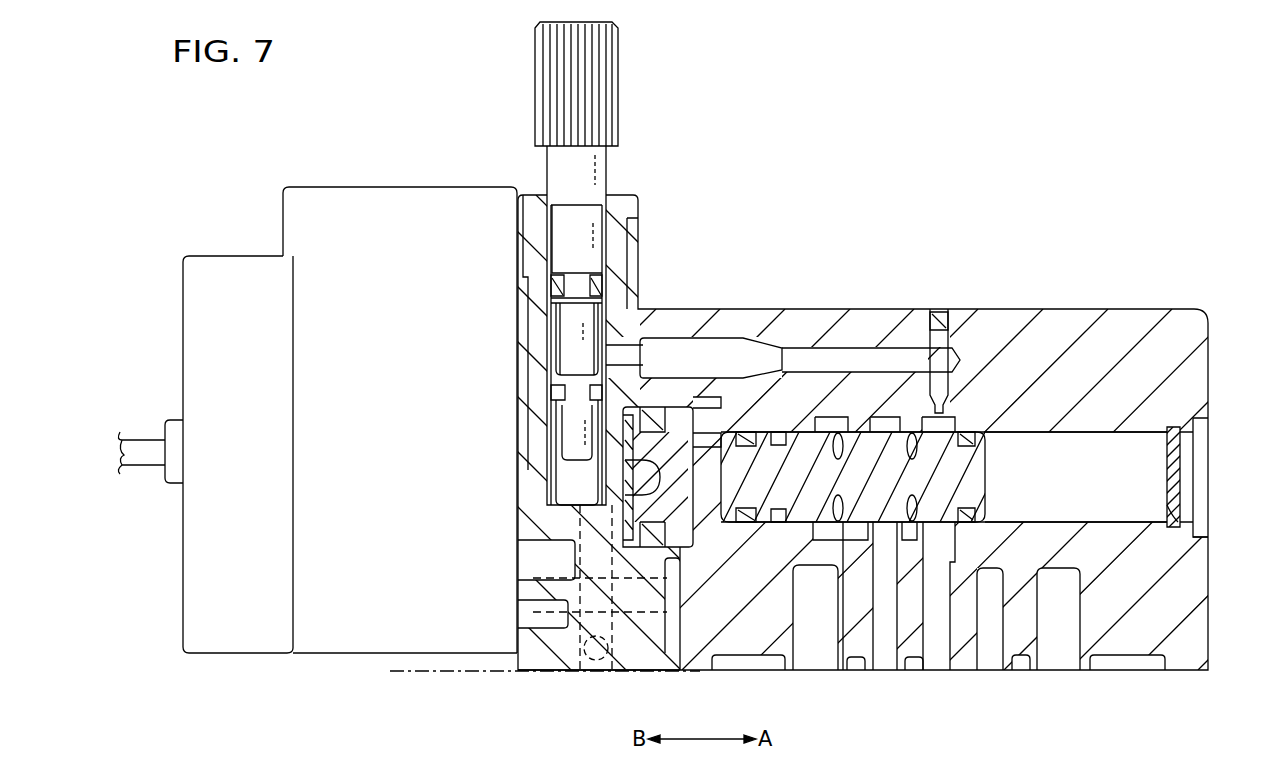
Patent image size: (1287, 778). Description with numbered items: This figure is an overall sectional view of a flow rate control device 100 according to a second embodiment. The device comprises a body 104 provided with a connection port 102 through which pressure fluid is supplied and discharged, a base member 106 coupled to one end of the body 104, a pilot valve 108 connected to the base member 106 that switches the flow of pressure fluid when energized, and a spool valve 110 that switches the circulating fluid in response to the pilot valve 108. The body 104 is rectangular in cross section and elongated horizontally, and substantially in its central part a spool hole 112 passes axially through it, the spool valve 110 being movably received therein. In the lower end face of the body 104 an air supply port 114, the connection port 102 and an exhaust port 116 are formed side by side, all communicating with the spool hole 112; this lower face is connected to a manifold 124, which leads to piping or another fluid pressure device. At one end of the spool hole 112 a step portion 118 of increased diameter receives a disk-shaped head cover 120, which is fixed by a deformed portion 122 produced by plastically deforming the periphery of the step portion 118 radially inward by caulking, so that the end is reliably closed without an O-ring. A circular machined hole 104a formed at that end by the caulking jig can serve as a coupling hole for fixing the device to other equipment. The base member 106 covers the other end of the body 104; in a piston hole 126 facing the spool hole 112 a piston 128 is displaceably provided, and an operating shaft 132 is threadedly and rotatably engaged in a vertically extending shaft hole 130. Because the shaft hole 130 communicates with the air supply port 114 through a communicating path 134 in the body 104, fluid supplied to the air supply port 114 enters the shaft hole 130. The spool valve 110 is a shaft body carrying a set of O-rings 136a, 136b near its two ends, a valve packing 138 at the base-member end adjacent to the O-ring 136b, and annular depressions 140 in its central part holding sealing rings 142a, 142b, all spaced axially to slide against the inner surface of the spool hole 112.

The flow rate control device 100 is at (868, 84).
The connection port 102 is at (888, 650).
The body 104 is at (1053, 303).
The machined hole 104a is at (1205, 532).
The base member 106 is at (550, 680).
The pilot valve 108 is at (323, 660).
The spool valve 110 is at (975, 466).
The spool hole 112 is at (1088, 450).
The air supply port 114 is at (940, 650).
The exhaust port 116 is at (828, 650).
The step portion 118 is at (1172, 515).
The head cover 120 is at (1178, 482).
The deformed portion 122 is at (1183, 429).
The manifold 124 is at (441, 676).
The piston hole 126 is at (668, 540).
The piston 128 is at (668, 423).
The shaft hole 130 is at (547, 343).
The operating shaft 132 is at (630, 71).
The communicating path 134 is at (797, 358).
The O-ring 136a is at (965, 432).
The O-ring 136b is at (752, 522).
The valve packing 138 is at (737, 430).
The annular depressions 140 is at (935, 498).
The sealing ring 142a is at (871, 360).
The sealing ring 142b is at (864, 361).